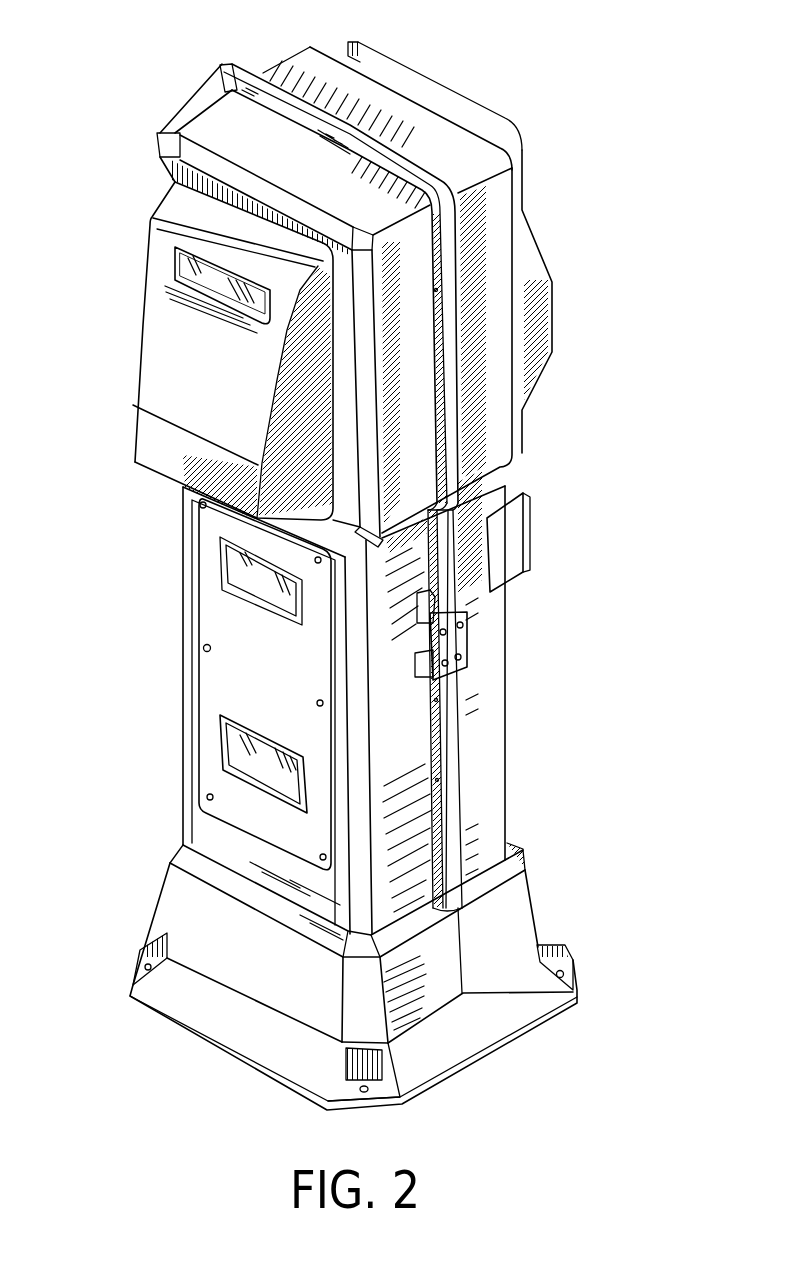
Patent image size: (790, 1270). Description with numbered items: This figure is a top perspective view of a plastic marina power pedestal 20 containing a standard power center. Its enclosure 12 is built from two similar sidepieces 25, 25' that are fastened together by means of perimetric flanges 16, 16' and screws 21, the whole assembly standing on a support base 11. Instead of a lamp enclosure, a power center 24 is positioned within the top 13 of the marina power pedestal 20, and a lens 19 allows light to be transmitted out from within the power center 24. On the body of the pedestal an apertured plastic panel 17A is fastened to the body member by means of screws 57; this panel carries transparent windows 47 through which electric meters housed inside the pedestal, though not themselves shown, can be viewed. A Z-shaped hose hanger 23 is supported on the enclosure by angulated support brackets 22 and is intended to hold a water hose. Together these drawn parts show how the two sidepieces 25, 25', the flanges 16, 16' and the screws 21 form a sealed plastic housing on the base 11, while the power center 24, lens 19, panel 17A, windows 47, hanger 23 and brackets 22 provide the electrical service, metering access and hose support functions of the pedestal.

The support base 11 is at (258, 979).
The enclosure 12 is at (422, 865).
The top 13 is at (421, 417).
The perimetric flange 16 is at (329, 137).
The perimetric flange 16' is at (259, 48).
The apertured plastic panel 17A is at (292, 694).
The lens 19 is at (170, 262).
The marina power pedestal 20 is at (678, 1081).
The screws 21 is at (390, 162).
The angulated support brackets 22 is at (422, 592).
The Z-shaped hose hanger 23 is at (531, 537).
The power center 24 is at (216, 389).
The sidepiece 25 is at (200, 706).
The sidepiece 25' is at (550, 673).
The transparent windows 47 is at (225, 752).
The screws 57 is at (203, 650).